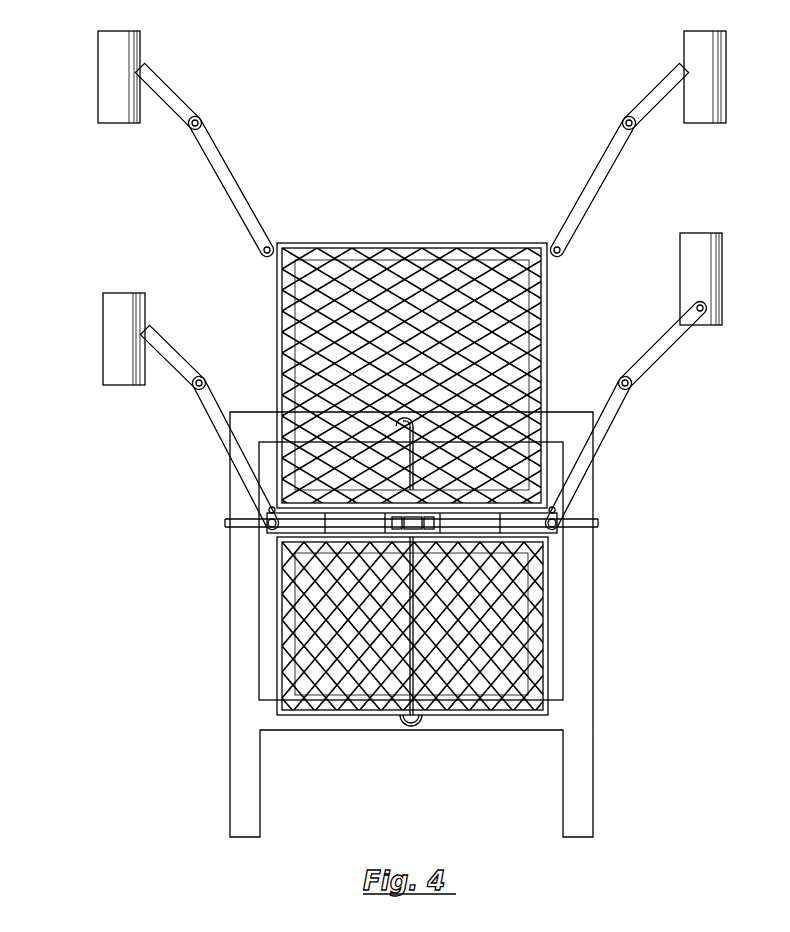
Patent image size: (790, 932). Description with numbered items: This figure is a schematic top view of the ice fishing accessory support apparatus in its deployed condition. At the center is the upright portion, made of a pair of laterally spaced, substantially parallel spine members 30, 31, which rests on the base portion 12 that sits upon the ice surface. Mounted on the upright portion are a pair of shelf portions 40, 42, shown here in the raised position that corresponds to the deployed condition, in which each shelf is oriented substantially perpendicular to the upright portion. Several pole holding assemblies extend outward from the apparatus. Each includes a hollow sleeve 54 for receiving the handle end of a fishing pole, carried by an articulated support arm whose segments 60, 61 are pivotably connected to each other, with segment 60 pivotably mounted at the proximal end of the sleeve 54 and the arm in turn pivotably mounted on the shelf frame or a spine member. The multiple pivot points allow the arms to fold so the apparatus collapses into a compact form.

The base portion 12 is at (245, 637).
The spine member 30 is at (556, 525).
The spine member 31 is at (268, 527).
The shelf portion 40 is at (545, 633).
The shelf portion 42 is at (420, 243).
The sleeve 54 is at (123, 342).
The segment 60 is at (218, 422).
The segment 61 is at (163, 348).